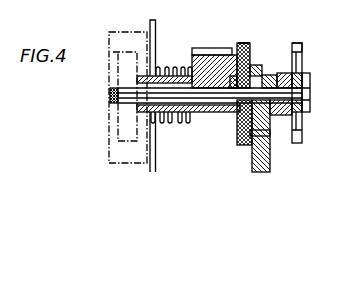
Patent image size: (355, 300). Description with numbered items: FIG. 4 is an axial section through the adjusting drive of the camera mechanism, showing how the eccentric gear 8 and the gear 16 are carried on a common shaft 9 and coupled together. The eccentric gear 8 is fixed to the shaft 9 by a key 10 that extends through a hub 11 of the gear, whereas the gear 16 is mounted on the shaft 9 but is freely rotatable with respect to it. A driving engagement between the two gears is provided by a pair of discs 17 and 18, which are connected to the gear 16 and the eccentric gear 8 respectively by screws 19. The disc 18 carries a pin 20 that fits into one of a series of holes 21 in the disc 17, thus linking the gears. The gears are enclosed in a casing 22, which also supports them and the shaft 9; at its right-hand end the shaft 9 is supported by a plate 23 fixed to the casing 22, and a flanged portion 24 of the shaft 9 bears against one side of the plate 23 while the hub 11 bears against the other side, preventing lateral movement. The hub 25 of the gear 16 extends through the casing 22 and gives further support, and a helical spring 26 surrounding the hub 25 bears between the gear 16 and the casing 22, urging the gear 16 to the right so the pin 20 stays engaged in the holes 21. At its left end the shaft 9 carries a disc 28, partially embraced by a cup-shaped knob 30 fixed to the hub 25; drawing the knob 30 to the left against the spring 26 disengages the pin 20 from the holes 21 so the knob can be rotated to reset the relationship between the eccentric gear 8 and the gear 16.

The eccentric gear 8 is at (269, 153).
The shaft 9 is at (287, 83).
The key 10 is at (298, 45).
The hub 11 is at (287, 112).
The gear 16 is at (200, 48).
The disc 17 is at (238, 43).
The disc 18 is at (250, 43).
The screws 19 is at (234, 75).
The pin 20 is at (256, 65).
The holes 21 is at (240, 133).
The casing 22 is at (154, 24).
The plate 23 is at (301, 55).
The flanged portion 24 is at (306, 94).
The hub 25 is at (164, 73).
The helical spring 26 is at (165, 118).
The disc 28 is at (115, 87).
The cup-shaped knob 30 is at (115, 33).